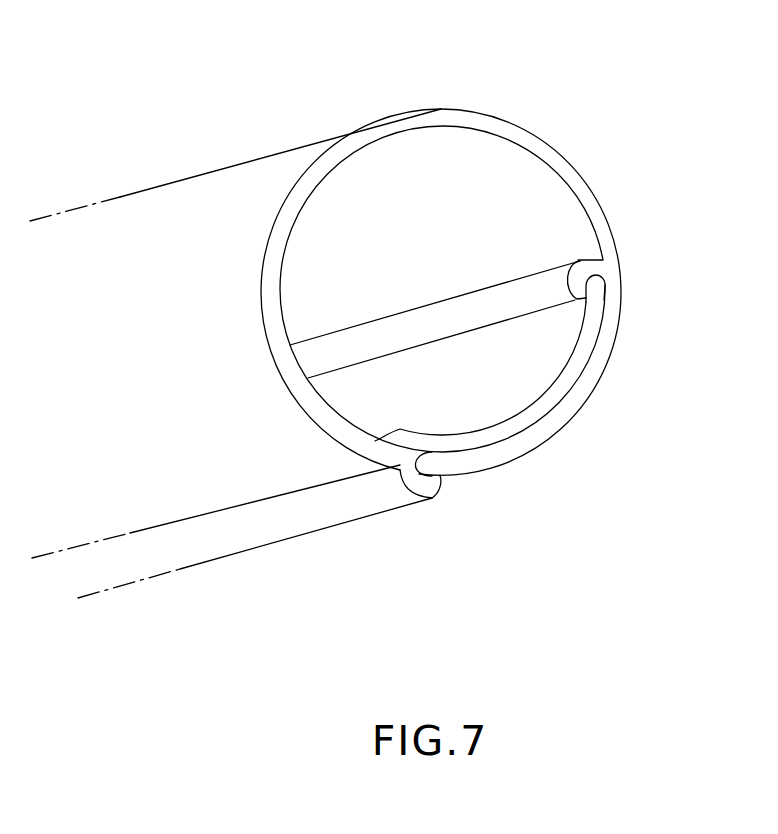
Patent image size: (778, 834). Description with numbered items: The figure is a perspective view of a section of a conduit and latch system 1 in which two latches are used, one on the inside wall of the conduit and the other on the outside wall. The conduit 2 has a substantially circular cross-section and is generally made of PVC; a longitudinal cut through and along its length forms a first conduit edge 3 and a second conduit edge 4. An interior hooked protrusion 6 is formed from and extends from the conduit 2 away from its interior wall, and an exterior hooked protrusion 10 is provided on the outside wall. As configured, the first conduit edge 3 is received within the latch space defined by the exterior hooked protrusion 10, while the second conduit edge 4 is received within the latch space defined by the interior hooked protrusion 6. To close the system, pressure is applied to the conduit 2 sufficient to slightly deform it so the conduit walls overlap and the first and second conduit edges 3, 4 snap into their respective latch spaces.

The conduit and latch system 1 is at (636, 67).
The conduit 2 is at (220, 180).
The first conduit edge 3 is at (428, 469).
The second conduit edge 4 is at (590, 300).
The interior hooked protrusion 6 is at (590, 262).
The exterior hooked protrusion 10 is at (437, 488).